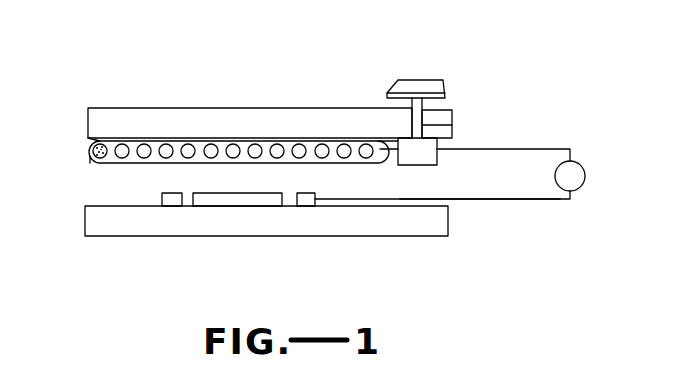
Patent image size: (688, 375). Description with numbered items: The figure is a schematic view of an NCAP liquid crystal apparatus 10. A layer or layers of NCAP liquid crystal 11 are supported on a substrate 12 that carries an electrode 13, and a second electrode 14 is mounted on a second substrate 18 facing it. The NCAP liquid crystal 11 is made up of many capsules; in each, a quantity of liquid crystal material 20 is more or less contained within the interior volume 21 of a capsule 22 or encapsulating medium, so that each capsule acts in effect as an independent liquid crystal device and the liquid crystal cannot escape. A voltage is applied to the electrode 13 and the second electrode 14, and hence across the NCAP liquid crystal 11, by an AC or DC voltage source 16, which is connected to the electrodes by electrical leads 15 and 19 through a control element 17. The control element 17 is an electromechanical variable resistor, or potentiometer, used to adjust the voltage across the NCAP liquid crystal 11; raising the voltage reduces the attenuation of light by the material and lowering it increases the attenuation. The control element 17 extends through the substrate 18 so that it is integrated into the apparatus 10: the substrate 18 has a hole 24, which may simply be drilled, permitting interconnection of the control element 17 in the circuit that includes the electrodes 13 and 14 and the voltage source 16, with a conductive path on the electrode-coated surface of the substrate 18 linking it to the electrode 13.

The NCAP liquid crystal apparatus 10 is at (510, 98).
The NCAP liquid crystal 11 is at (113, 160).
The substrate 12 is at (207, 117).
The electrode 13 is at (266, 142).
The second electrode 14 is at (252, 200).
The electrical lead 15 is at (527, 149).
The voltage source 16 is at (586, 175).
The control element 17 is at (444, 80).
The substrate 18 is at (397, 228).
The electrical lead 19 is at (503, 203).
The liquid crystal material 20 is at (92, 148).
The interior volume 21 is at (90, 160).
The capsule 22 is at (105, 141).
The hole 24 is at (452, 127).